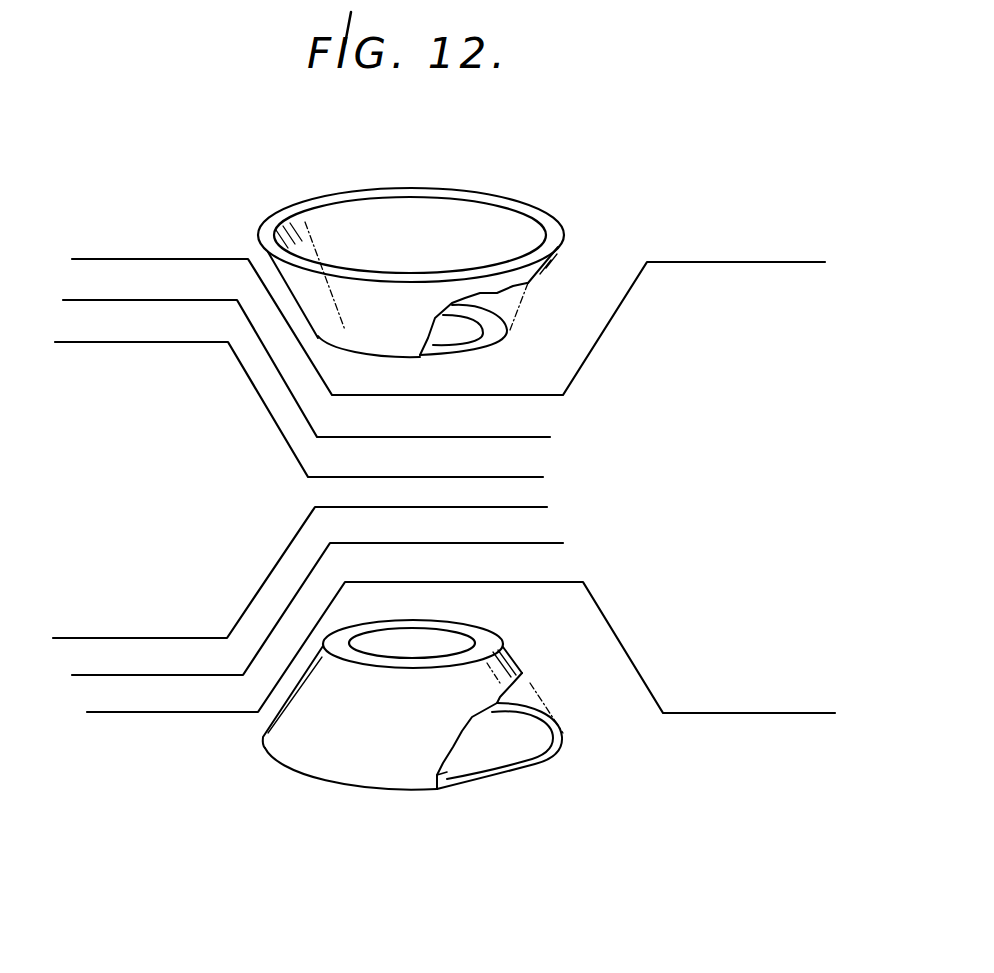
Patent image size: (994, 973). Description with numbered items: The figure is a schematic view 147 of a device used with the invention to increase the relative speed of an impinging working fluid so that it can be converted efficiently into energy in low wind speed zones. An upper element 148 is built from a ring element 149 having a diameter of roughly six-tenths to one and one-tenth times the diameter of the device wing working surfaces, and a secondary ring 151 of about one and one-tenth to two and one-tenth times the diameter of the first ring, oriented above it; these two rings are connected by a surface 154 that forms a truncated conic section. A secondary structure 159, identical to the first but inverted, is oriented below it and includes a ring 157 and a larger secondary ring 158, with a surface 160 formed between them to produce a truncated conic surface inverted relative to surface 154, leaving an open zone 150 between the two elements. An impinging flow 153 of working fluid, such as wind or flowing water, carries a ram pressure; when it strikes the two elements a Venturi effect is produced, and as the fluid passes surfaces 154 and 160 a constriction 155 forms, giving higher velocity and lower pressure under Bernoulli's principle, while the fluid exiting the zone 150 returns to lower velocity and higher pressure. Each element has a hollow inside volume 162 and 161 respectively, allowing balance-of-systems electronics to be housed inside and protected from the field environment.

The schematic view 147 is at (262, 150).
The first element 148 is at (578, 237).
The ring element 149 is at (499, 338).
The zone 150 is at (448, 329).
The secondary ring 151 is at (537, 217).
The impinging flow 153 is at (247, 408).
The surface 154 is at (330, 313).
The constriction 155 is at (318, 490).
The ring 157 is at (482, 643).
The secondary ring 158 is at (541, 760).
The secondary structure 159 is at (330, 813).
The surface 160 is at (338, 730).
The hollow inside volume 161 is at (477, 748).
The hollow inside volume 162 is at (395, 239).